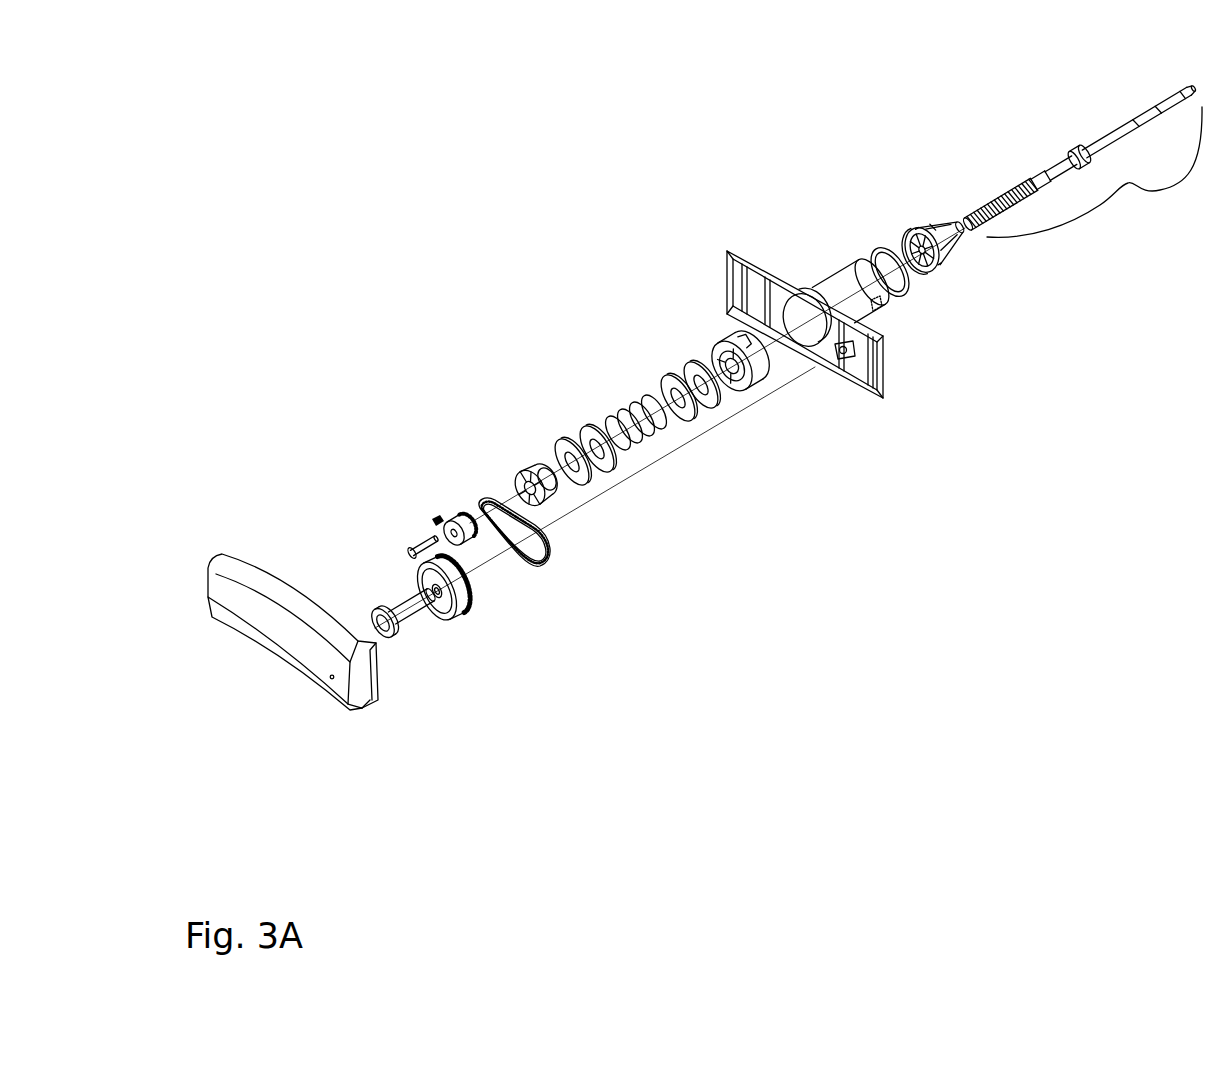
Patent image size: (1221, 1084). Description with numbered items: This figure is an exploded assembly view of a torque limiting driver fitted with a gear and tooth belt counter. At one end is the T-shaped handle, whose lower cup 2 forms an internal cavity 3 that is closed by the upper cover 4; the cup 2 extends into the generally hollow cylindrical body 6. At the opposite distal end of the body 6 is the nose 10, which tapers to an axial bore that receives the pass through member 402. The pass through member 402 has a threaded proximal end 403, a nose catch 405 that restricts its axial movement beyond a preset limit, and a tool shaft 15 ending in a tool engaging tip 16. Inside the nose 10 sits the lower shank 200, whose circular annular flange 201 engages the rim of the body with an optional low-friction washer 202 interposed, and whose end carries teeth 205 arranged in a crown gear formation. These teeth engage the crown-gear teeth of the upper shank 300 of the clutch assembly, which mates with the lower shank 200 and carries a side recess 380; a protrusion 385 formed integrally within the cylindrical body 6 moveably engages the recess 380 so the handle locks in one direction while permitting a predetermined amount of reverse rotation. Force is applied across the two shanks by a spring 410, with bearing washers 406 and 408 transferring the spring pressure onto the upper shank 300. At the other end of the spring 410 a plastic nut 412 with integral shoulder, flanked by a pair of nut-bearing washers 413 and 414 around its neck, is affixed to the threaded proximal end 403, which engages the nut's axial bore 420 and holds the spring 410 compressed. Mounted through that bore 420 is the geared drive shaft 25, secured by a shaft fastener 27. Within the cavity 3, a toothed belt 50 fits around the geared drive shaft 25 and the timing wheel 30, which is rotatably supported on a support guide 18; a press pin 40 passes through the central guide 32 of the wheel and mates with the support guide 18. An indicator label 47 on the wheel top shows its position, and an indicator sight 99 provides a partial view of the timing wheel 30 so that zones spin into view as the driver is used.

The cup handle 2 is at (727, 255).
The internal cavity 3 is at (756, 295).
The cover 4 is at (293, 632).
The cylindrical body 6 is at (877, 308).
The nose 10 is at (948, 227).
The tool shaft 15 is at (1140, 125).
The tool engaging tip 16 is at (1195, 87).
The support guide 18 is at (845, 354).
The geared drive shaft 25 is at (478, 549).
The shaft fastener 27 is at (423, 543).
The timing wheel 30 is at (469, 623).
The central guide 32 is at (438, 593).
The press pin 40 is at (397, 607).
The indicator label 47 is at (412, 580).
The toothed belt 50 is at (543, 563).
The indicator sight 99 is at (330, 678).
The lower shank 200 is at (893, 205).
The circular annular flange 201 is at (940, 270).
The washer 202 is at (913, 278).
The teeth 205 is at (905, 243).
The upper shank 300 is at (733, 400).
The recess 380 is at (758, 380).
The protrusion 385 is at (880, 312).
The pass through member 402 is at (1129, 186).
The threaded proximal end 403 is at (1010, 197).
The nose catch 405 is at (1080, 150).
The bearing washer 406 is at (688, 368).
The bearing washer 408 is at (680, 415).
The spring 410 is at (630, 410).
The plastic nut 412 is at (554, 503).
The nut-bearing washer 413 is at (617, 467).
The nut-bearing washer 414 is at (565, 440).
The axial bore 420 is at (518, 493).